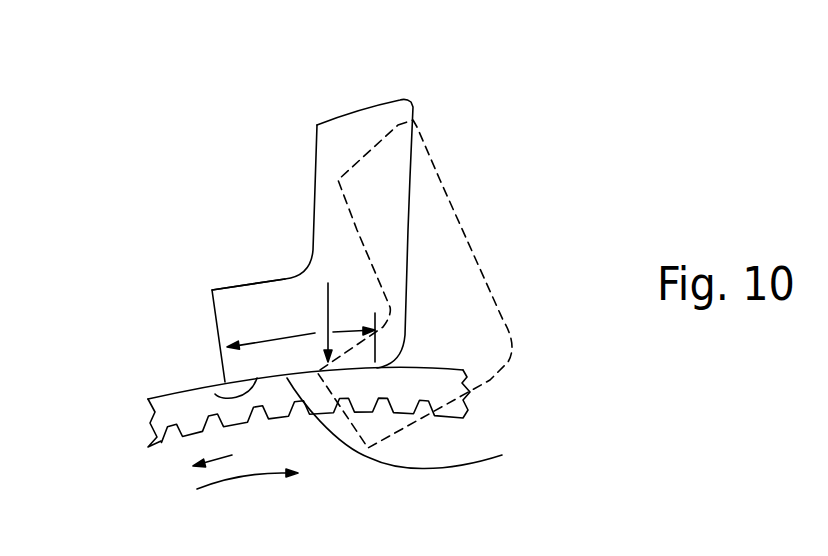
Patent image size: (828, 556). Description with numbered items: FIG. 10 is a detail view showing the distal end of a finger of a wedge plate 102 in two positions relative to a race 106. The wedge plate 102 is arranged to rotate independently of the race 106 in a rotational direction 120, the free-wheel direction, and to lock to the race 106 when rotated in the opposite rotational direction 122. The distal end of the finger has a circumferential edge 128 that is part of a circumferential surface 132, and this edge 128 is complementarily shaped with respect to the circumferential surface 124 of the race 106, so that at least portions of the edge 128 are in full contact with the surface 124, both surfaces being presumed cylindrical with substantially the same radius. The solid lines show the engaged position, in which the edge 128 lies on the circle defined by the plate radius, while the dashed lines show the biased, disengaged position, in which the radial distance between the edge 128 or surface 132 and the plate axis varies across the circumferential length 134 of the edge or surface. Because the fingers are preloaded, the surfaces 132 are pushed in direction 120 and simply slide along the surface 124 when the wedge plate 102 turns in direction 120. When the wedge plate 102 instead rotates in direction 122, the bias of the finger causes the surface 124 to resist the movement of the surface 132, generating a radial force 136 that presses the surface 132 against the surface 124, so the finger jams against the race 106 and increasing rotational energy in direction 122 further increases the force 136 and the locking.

The wedge plate 102 is at (407, 91).
The race 106 is at (193, 409).
The rotational direction 120 is at (213, 487).
The rotational direction 122 is at (293, 452).
The circumferential surface 124 is at (185, 390).
The circumferential edge 128 is at (215, 394).
The circumferential surface 132 is at (421, 423).
The circumferential length 134 is at (288, 337).
The radial force 136 is at (328, 302).